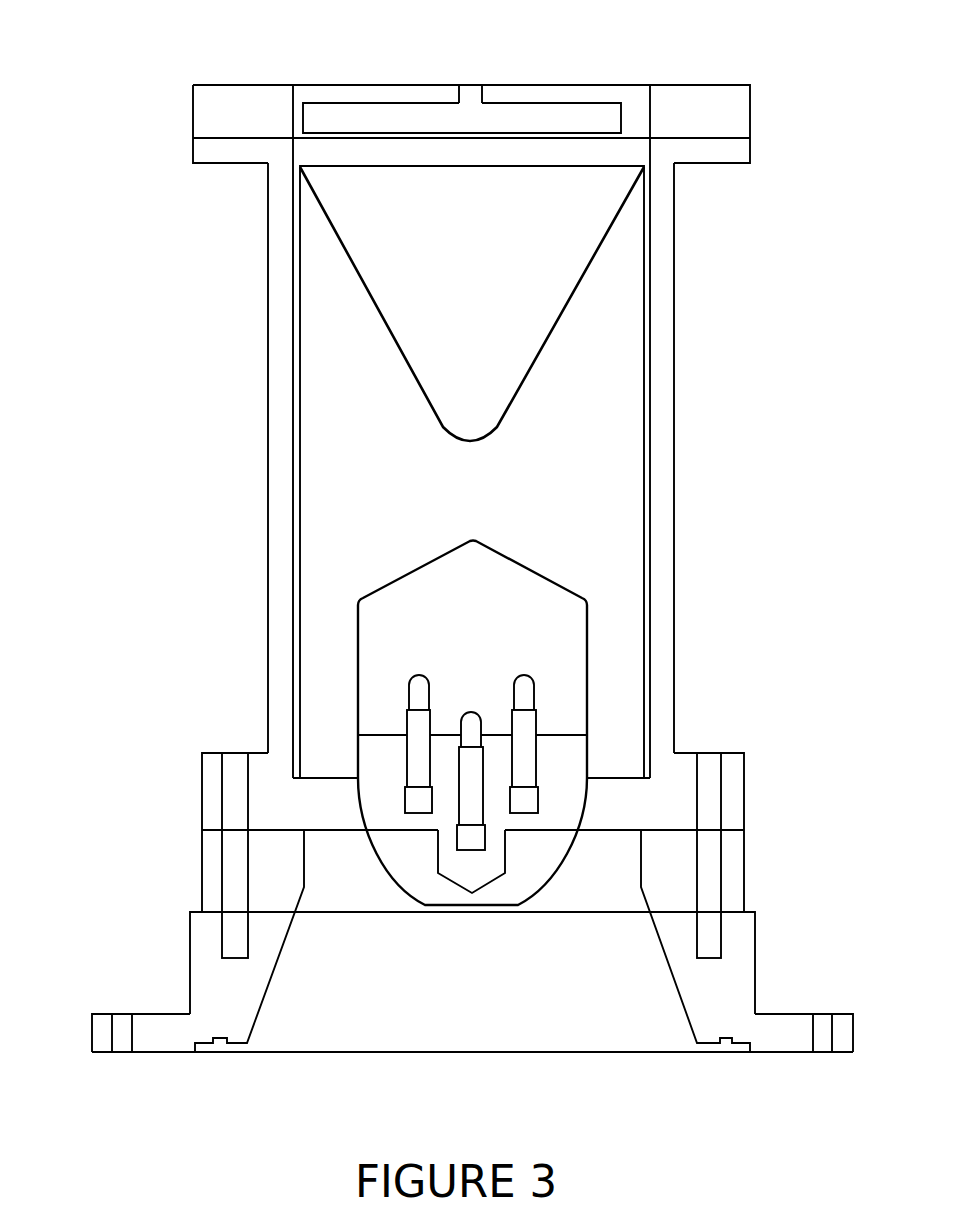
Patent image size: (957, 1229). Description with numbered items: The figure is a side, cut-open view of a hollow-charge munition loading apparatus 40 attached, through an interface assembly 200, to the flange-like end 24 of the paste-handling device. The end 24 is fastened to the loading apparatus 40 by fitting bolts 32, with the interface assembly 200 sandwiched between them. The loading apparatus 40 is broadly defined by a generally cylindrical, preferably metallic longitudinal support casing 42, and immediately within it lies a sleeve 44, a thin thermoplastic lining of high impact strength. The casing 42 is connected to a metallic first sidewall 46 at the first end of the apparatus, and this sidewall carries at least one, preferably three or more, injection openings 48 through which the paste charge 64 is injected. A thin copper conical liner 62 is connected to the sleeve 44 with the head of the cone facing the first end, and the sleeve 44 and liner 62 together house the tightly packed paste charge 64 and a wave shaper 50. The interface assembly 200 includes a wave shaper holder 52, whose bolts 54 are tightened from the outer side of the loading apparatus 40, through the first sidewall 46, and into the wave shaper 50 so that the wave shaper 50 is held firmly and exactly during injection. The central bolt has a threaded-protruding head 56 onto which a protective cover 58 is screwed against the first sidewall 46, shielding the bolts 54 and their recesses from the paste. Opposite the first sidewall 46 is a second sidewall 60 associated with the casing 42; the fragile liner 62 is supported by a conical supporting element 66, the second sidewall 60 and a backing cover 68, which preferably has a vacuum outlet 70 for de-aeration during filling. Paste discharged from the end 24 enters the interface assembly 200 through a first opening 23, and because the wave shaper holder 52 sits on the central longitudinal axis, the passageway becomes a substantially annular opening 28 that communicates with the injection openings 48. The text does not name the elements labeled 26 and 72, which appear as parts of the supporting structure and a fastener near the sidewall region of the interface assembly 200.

The interface assembly 200 is at (147, 917).
The hollow-charge munition loading apparatus 40 is at (216, 388).
The first opening 23 is at (462, 1030).
The end 24 is at (153, 1040).
The support post 26 is at (207, 868).
The annular opening 28 is at (348, 885).
The fitting bolts 32 is at (228, 752).
The longitudinal support casing 42 is at (668, 490).
The sleeve 44 is at (276, 492).
The first sidewall 46 is at (740, 806).
The injection openings 48 is at (335, 777).
The wave shaper 50 is at (575, 610).
The wave shaper holder 52 is at (528, 893).
The bolts 54 is at (537, 720).
The threaded-protruding head 56 is at (482, 850).
The protective cover 58 is at (455, 900).
The second sidewall 60 is at (398, 142).
The conical liner 62 is at (585, 232).
The paste charge 64 is at (605, 435).
The conical supporting element 66 is at (329, 118).
The backing cover 68 is at (741, 100).
The vacuum outlet 70 is at (465, 98).
The bolt 72 is at (722, 878).